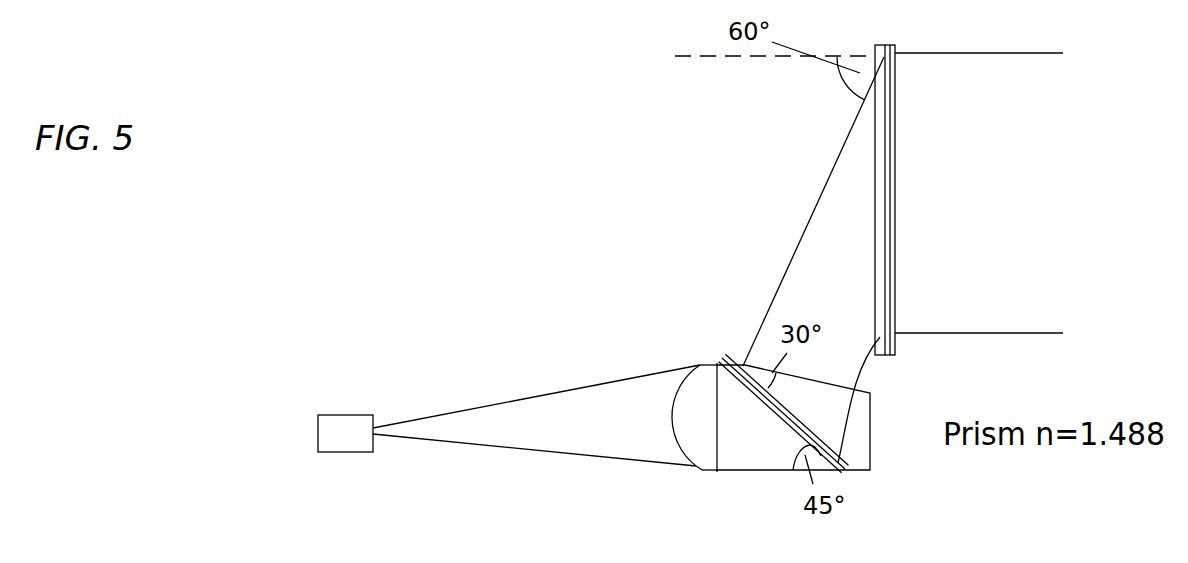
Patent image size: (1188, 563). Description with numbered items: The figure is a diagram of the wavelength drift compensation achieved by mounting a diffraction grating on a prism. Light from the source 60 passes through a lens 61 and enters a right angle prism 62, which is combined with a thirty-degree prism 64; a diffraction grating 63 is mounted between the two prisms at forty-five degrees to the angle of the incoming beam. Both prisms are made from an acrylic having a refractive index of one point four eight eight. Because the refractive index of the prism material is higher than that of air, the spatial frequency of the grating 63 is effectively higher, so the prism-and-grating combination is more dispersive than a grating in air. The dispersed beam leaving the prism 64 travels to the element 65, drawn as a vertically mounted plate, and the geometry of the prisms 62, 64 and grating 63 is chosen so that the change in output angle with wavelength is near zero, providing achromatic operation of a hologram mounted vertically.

The light source 60 is at (342, 427).
The lens 61 is at (695, 428).
The right angle prism 62 is at (753, 470).
The diffraction grating 63 is at (733, 365).
The 30° prism 64 is at (830, 405).
The mirror 65 is at (887, 205).